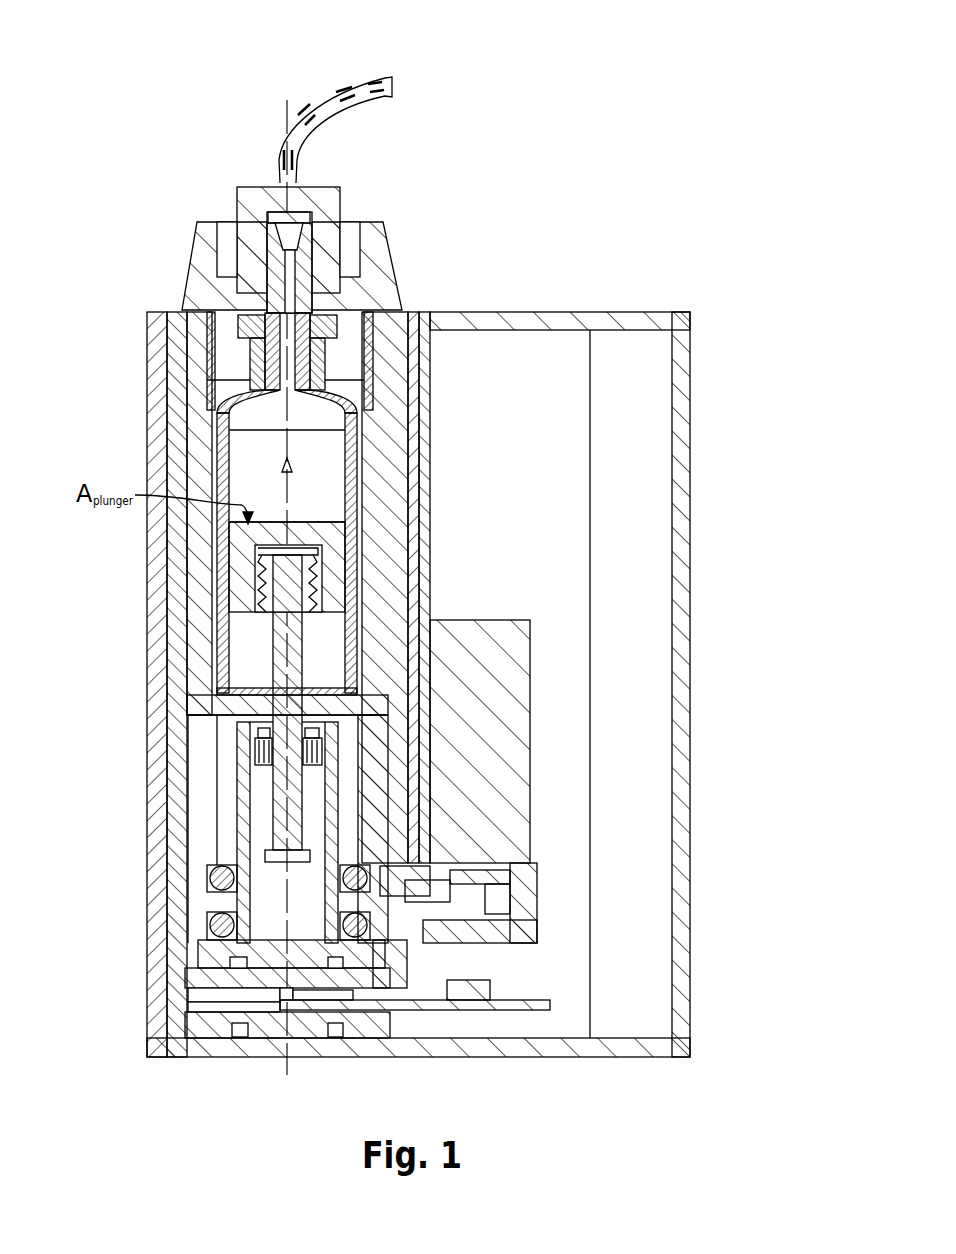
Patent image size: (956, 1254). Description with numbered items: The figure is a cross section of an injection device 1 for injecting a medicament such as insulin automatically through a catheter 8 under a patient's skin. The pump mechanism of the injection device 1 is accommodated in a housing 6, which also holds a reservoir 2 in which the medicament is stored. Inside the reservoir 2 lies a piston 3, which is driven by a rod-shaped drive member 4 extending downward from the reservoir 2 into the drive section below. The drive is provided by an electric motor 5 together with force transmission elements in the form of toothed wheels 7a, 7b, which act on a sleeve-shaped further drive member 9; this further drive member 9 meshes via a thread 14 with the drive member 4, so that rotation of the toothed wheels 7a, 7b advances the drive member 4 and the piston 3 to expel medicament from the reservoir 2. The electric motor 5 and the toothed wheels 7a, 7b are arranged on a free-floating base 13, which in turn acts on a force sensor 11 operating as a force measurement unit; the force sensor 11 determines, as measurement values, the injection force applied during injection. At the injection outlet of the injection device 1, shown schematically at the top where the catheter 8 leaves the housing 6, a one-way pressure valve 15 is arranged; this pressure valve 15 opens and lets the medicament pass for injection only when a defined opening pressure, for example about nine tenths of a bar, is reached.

The injection device 1 is at (580, 272).
The reservoir 2 is at (213, 478).
The piston 3 is at (238, 560).
The rod-shaped drive member 4 is at (262, 633).
The electric motor 5 is at (512, 648).
The housing 6 is at (165, 340).
The toothed wheel 7a is at (488, 905).
The toothed wheel 7b is at (415, 905).
The catheter 8 is at (383, 78).
The sleeve-shaped further drive member 9 is at (256, 722).
The force sensor 11 is at (405, 1002).
The free-floating base 13 is at (215, 980).
The thread 14 is at (265, 730).
The one-way pressure valve 15 is at (300, 217).